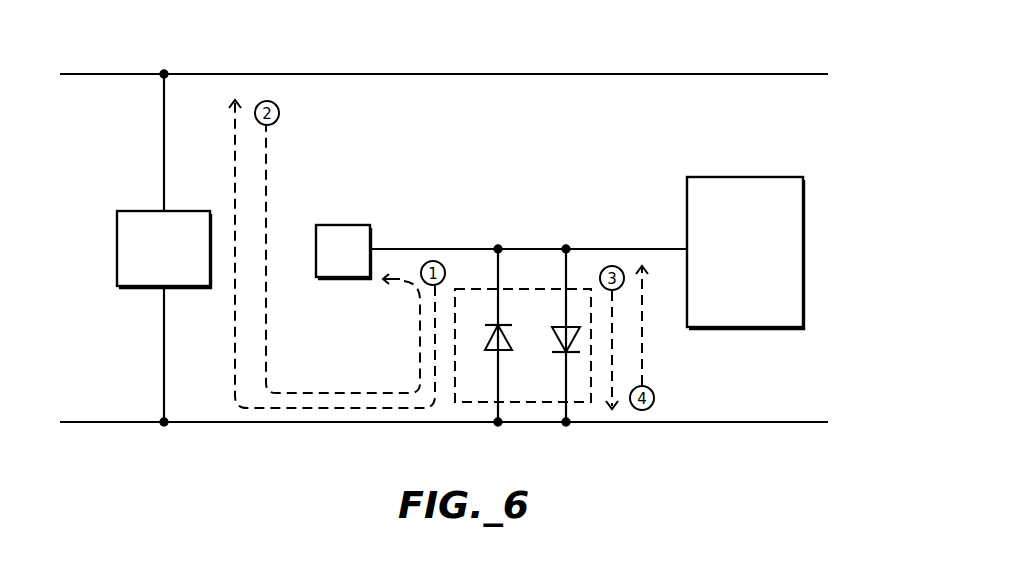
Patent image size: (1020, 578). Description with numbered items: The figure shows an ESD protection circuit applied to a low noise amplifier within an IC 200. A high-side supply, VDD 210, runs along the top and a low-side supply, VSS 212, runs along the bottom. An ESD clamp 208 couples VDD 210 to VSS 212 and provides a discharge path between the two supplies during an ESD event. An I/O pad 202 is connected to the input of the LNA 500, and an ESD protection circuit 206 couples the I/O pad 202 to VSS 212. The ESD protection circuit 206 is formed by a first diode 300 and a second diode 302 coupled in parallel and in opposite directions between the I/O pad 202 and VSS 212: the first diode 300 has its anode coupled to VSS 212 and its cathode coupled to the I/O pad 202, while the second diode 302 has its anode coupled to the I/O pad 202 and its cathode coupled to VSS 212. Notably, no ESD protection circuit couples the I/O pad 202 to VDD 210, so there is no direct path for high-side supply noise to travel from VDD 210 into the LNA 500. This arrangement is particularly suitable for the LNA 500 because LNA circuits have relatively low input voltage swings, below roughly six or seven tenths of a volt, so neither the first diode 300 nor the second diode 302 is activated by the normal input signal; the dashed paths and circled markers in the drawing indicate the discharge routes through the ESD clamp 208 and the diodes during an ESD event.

The IC 200 is at (621, 55).
The I/O pad 202 is at (342, 224).
The ESD protection circuit 206 is at (543, 403).
The ESD clamp 208 is at (148, 210).
The VDD 210 is at (291, 73).
The VSS 212 is at (146, 421).
The first diode 300 is at (497, 352).
The second diode 302 is at (560, 327).
The LNA 500 is at (705, 177).